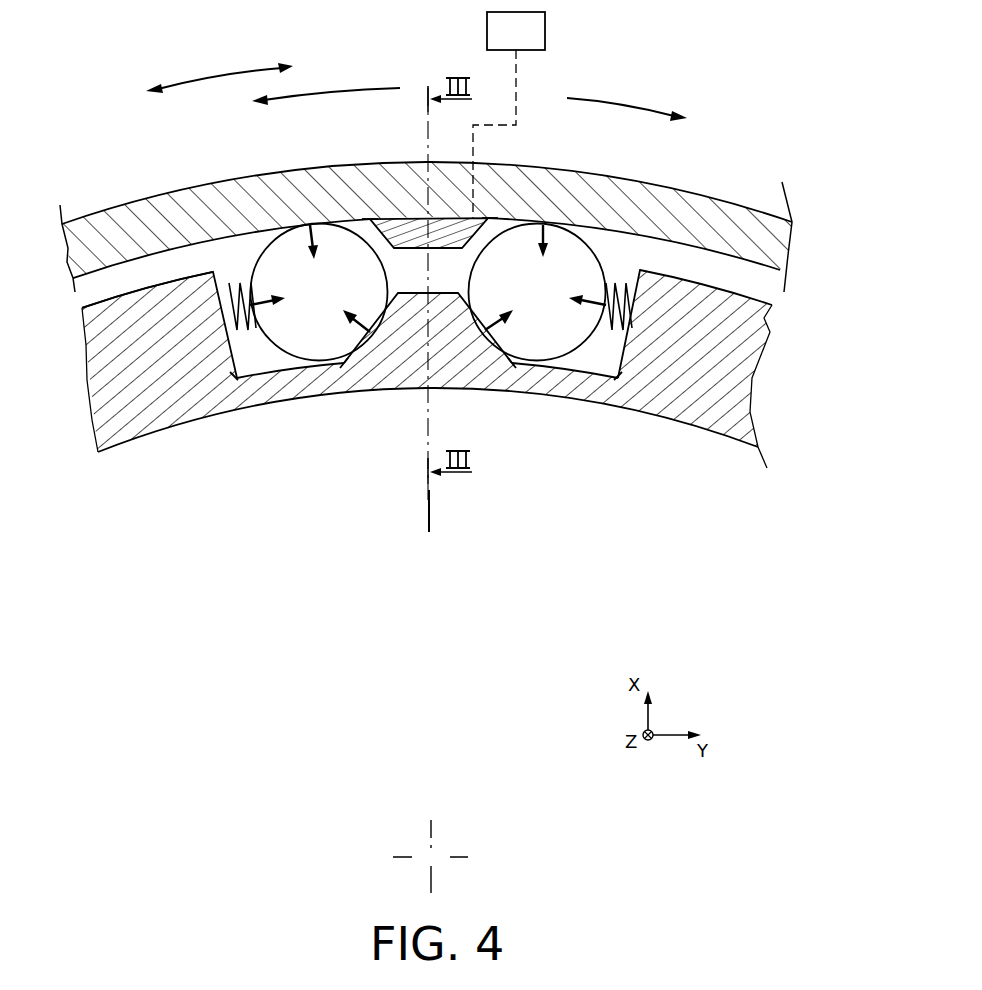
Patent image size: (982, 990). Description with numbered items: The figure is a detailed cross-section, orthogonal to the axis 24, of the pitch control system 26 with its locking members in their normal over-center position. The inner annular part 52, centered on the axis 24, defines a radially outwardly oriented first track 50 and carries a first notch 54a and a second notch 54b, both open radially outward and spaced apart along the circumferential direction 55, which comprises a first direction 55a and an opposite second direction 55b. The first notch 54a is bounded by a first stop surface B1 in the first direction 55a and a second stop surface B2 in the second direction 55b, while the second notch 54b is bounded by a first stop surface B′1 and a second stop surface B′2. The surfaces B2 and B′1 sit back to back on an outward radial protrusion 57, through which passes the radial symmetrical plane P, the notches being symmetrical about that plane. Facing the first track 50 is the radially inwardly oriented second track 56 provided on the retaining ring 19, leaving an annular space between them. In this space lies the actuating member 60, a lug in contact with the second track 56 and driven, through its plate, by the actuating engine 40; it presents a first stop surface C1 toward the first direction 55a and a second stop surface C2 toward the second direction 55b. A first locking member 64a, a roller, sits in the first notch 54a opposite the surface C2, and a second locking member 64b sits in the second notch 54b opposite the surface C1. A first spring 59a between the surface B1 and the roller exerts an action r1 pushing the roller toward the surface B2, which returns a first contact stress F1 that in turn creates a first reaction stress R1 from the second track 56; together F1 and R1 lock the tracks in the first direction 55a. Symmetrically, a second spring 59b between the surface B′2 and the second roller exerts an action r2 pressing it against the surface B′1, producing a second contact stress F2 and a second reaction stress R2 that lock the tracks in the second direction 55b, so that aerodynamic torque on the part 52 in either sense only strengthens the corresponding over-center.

The retaining ring 19 is at (197, 188).
The axis 24 is at (432, 853).
The pitch control system 26 is at (116, 110).
The actuating engine 40 is at (545, 45).
The first track 50 is at (104, 240).
The annular part 52 is at (155, 413).
The first notch 54a is at (286, 366).
The second notch 54b is at (584, 362).
The circumferential direction 55 is at (210, 74).
The first direction 55a is at (325, 94).
The second direction 55b is at (614, 104).
The second track 56 is at (752, 266).
The outward radial protrusion 57 is at (410, 325).
The first spring 59a is at (135, 290).
The second spring 59b is at (622, 285).
The actuating member 60 is at (402, 220).
The first locking member 64a is at (270, 253).
The second locking member 64b is at (566, 242).
The first stop surface of the actuating member C1 is at (503, 220).
The second stop surface of the actuating member C2 is at (363, 217).
The first reaction stress R1 is at (318, 258).
The second reaction stress R2 is at (538, 256).
The action of the first spring r1 is at (278, 301).
The action of the second spring r2 is at (582, 300).
The first contact stress F1 is at (344, 313).
The second contact stress F2 is at (512, 313).
The first stop surface of the first notch B1 is at (240, 380).
The second stop surface of the first notch B2 is at (352, 362).
The first stop surface of the second notch B′1 is at (512, 365).
The second stop surface of the second notch B′2 is at (603, 378).
The radial symmetrical plane P is at (432, 510).